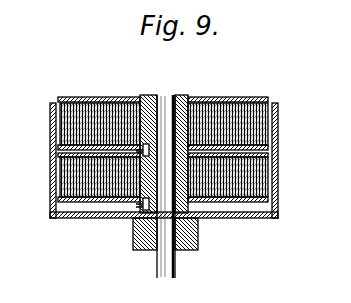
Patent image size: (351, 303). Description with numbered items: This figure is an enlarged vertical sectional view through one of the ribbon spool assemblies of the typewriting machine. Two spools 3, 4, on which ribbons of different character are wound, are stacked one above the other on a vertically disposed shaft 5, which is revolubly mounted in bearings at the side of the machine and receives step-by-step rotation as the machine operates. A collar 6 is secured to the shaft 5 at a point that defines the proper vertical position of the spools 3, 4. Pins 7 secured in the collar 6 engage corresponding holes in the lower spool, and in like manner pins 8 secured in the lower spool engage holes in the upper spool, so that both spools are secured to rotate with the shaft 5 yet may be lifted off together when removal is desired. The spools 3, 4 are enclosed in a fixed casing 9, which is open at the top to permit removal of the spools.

The spool 3 is at (257, 177).
The spool 4 is at (266, 100).
The shaft 5 is at (158, 275).
The collar 6 is at (146, 208).
The pin 7 is at (143, 203).
The pin 8 is at (147, 152).
The casing 9 is at (278, 138).